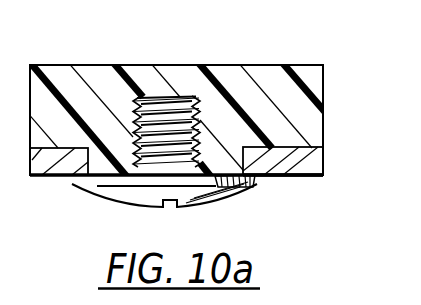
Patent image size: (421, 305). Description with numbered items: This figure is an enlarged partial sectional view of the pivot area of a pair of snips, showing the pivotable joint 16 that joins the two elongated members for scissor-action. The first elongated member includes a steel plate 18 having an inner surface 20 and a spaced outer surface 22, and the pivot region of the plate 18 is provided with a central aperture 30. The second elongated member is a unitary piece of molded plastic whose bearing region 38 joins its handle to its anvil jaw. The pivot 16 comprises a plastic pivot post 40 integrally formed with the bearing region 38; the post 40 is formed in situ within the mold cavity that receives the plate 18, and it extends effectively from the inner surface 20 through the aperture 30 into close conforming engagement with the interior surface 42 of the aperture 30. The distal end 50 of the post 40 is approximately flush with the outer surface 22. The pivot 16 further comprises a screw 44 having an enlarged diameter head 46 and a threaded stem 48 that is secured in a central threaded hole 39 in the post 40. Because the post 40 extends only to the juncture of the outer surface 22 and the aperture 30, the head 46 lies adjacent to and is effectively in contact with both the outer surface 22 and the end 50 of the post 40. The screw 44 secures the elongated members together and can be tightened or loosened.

The pivotable joint 16 is at (121, 212).
The steel plate 18 is at (312, 162).
The inner surface 20 is at (297, 148).
The outer surface 22 is at (309, 174).
The central aperture 30 is at (236, 191).
The bearing region 38 is at (263, 73).
The central threaded hole 39 is at (183, 98).
The pivot post 40 is at (101, 180).
The interior surface 42 is at (90, 174).
The screw 44 is at (187, 205).
The enlarged diameter head 46 is at (138, 207).
The threaded stem 48 is at (156, 105).
The distal end 50 is at (231, 186).